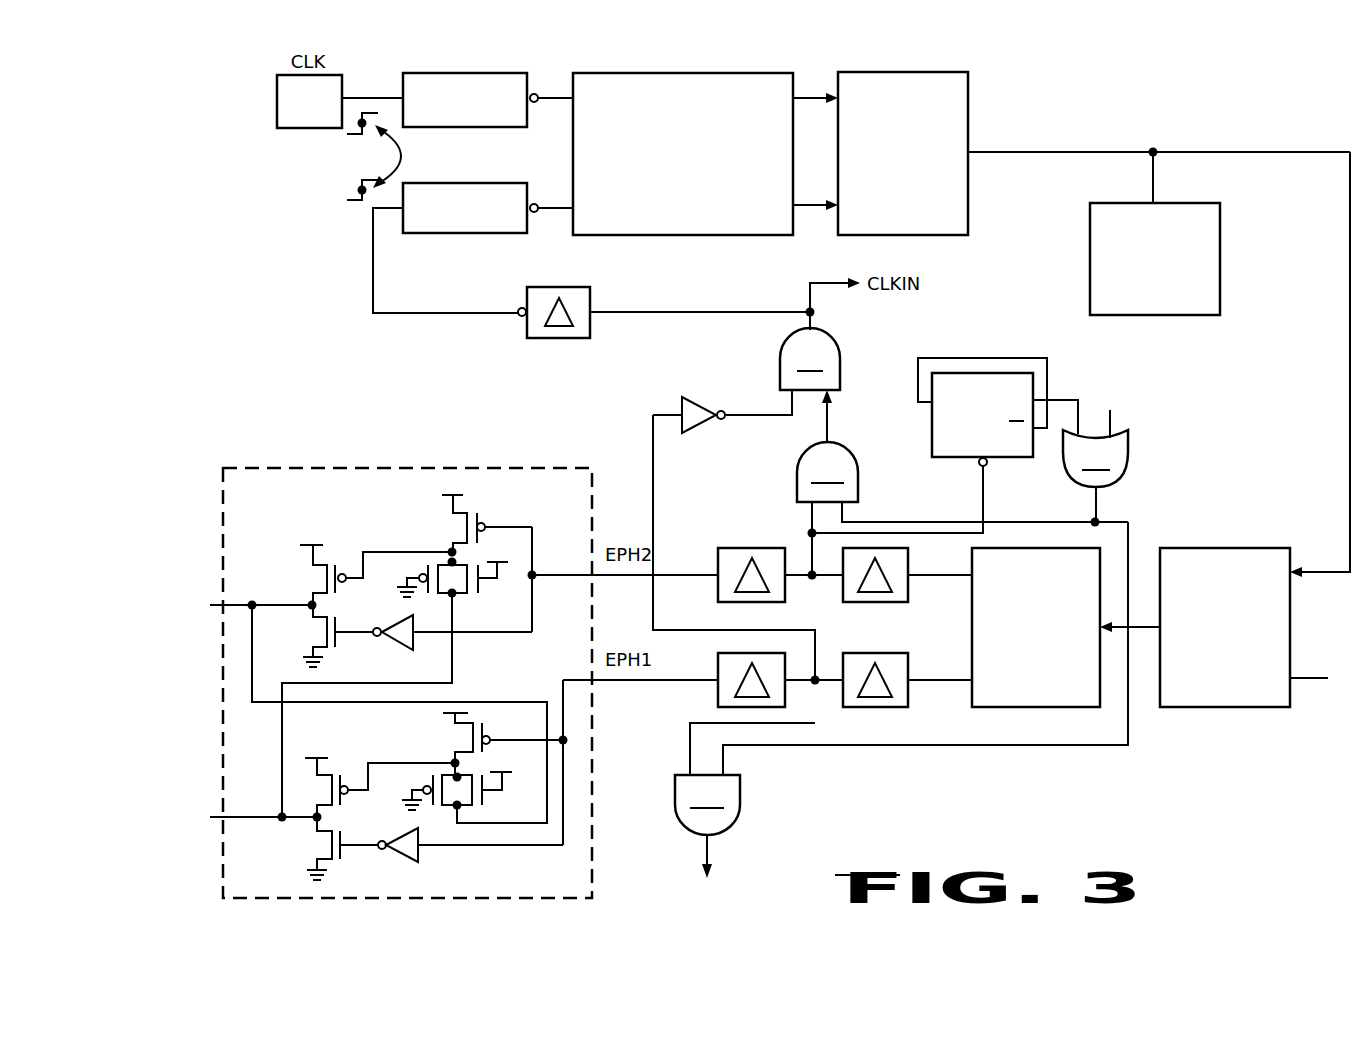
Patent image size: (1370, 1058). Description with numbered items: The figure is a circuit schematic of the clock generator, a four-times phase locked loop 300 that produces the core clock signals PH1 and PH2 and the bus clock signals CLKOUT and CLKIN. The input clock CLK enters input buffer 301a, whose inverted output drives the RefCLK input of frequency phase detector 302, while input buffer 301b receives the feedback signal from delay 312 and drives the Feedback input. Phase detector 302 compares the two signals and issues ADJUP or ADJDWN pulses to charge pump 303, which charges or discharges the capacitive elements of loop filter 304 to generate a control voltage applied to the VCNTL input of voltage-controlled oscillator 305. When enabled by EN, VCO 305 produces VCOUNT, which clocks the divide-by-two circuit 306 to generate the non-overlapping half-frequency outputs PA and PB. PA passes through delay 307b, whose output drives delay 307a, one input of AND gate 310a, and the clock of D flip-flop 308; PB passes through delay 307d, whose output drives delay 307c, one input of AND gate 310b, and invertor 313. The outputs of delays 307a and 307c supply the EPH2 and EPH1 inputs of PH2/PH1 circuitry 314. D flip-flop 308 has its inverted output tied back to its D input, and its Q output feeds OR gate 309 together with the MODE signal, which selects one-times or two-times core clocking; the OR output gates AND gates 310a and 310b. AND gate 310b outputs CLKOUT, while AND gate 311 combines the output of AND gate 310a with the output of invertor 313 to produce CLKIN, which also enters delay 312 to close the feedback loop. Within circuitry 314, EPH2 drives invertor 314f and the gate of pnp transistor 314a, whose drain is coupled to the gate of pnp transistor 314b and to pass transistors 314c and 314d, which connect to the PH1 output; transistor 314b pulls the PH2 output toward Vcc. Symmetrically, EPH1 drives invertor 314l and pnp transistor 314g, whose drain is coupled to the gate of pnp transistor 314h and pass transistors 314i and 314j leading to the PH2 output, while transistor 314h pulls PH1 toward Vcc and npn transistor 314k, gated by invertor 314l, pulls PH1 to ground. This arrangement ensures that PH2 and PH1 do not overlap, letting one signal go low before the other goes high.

The phase locked loop 300 is at (1053, 94).
The input buffer 301a is at (473, 128).
The input buffer 301b is at (473, 233).
The frequency phase detector 302 is at (748, 235).
The charge pump 303 is at (917, 235).
The loop filter 304 is at (1222, 248).
The voltage-controlled oscillator 305 is at (1233, 548).
The divide-by-2 circuit 306 is at (1033, 707).
The delay 307a is at (755, 602).
The delay 307b is at (873, 602).
The delay 307c is at (717, 667).
The delay 307d is at (880, 653).
The D flip-flop 308 is at (932, 430).
The OR gate 309 is at (1104, 456).
The AND gate 310a is at (962, 510).
The AND gate 310b is at (900, 714).
The AND gate 311 is at (783, 385).
The delay 312 is at (558, 338).
The invertor 313 is at (697, 397).
The PH2/PH1 circuitry 314 is at (579, 886).
The pnp transistor 314a is at (457, 527).
The pnp transistor 314b is at (317, 580).
The transistor 314c is at (408, 568).
The transistor 314d is at (480, 590).
The invertor 314f is at (398, 640).
The pnp transistor 314g is at (457, 745).
The pnp transistor 314h is at (317, 792).
The transistor 314i is at (408, 780).
The transistor 314j is at (488, 800).
The npn transistor 314k is at (330, 847).
The invertor 314l is at (400, 862).